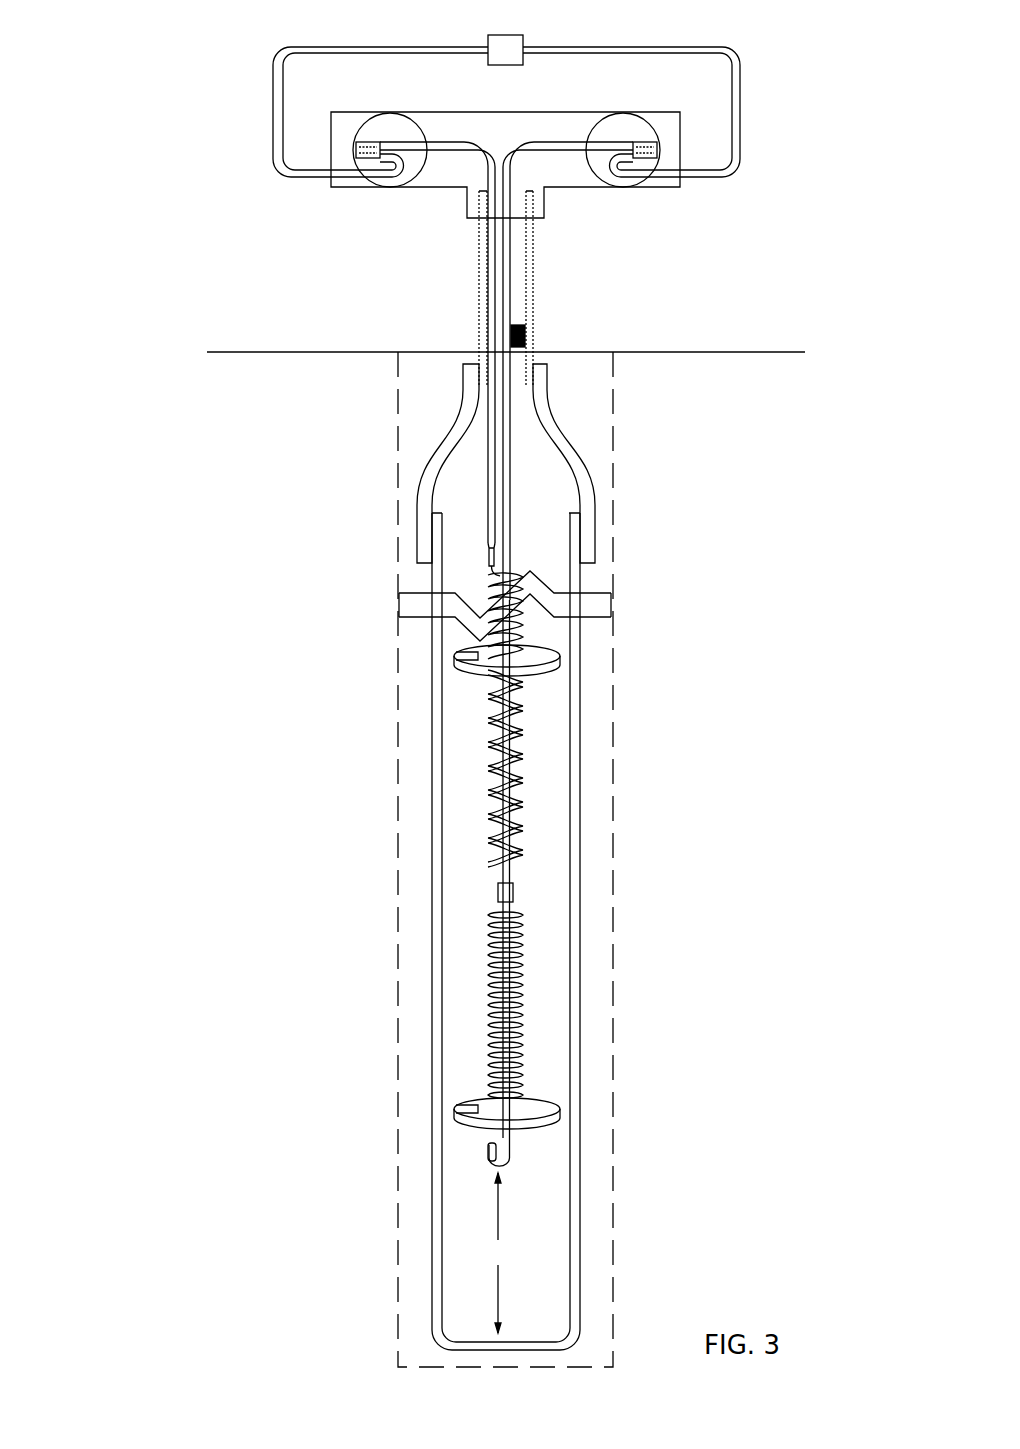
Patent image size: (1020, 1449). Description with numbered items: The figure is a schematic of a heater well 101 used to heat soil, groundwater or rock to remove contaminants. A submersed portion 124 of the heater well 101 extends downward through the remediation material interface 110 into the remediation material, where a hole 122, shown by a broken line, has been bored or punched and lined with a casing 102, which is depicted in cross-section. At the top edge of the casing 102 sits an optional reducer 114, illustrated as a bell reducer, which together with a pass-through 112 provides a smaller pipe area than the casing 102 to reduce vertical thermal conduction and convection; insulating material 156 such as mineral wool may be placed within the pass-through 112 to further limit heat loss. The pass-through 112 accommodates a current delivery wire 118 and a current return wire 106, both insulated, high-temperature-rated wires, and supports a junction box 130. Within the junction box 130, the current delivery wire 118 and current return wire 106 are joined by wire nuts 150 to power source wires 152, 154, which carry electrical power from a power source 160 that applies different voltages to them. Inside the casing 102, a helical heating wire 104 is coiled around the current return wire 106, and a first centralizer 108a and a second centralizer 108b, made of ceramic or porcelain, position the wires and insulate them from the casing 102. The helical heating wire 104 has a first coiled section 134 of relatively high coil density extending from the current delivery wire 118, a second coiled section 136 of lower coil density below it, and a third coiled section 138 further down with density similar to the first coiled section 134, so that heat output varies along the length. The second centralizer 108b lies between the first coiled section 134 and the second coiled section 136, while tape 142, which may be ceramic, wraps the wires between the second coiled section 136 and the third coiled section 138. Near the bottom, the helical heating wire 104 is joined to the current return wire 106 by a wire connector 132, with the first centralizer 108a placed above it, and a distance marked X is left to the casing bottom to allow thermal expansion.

The heater well 101 is at (216, 251).
The casing 102 is at (580, 1212).
The helical heating wire 104 is at (520, 972).
The current return wire 106 is at (562, 142).
The first centralizer 108a is at (560, 1115).
The second centralizer 108b is at (595, 533).
The remediation material interface 110 is at (223, 352).
The pass-through 112 is at (533, 248).
The reducer 114 is at (567, 470).
The current delivery wire 118 is at (427, 142).
The hole 122 is at (612, 398).
The submersed portion 124 is at (358, 544).
The junction box 130 is at (507, 110).
The wire connector 132 is at (510, 1150).
The first coiled section 134 is at (399, 577).
The second coiled section 136 is at (399, 658).
The third coiled section 138 is at (399, 1165).
The tape 142 is at (513, 893).
The wire nuts 150 is at (372, 140).
The power source wire 152 is at (312, 180).
The power source wire 154 is at (698, 178).
The insulating material 156 is at (525, 325).
The power source 160 is at (505, 33).